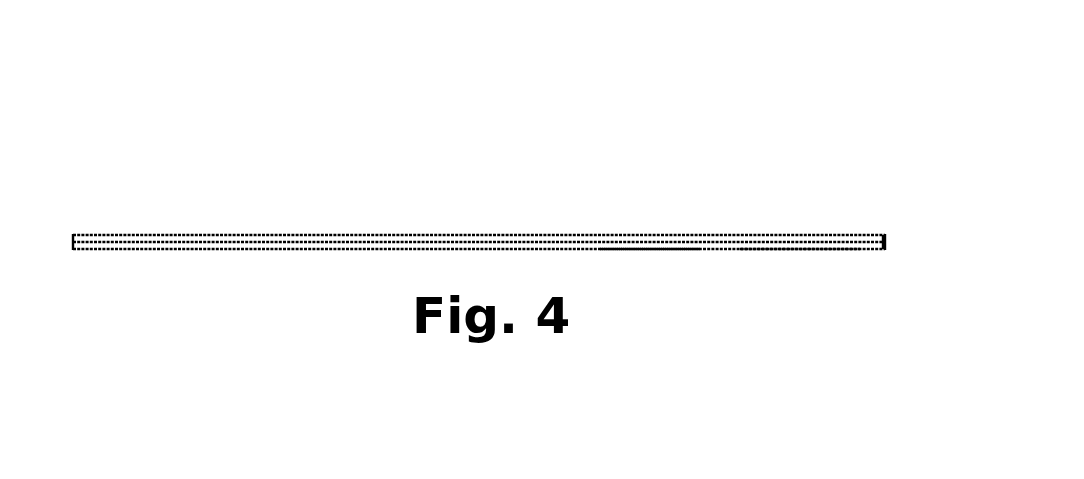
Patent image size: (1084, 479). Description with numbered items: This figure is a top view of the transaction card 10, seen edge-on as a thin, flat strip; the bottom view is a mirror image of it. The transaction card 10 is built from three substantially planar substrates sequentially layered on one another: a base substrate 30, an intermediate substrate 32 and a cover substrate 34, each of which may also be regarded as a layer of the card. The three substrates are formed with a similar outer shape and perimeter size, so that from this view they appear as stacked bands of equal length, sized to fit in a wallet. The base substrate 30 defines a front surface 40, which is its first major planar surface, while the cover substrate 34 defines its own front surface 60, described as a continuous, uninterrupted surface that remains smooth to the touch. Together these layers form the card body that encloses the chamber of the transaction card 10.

The transaction card 10 is at (220, 136).
The base substrate 30 is at (777, 234).
The intermediate substrate 32 is at (885, 240).
The cover substrate 34 is at (798, 251).
The front surface 40 is at (465, 234).
The front surface 60 is at (642, 251).